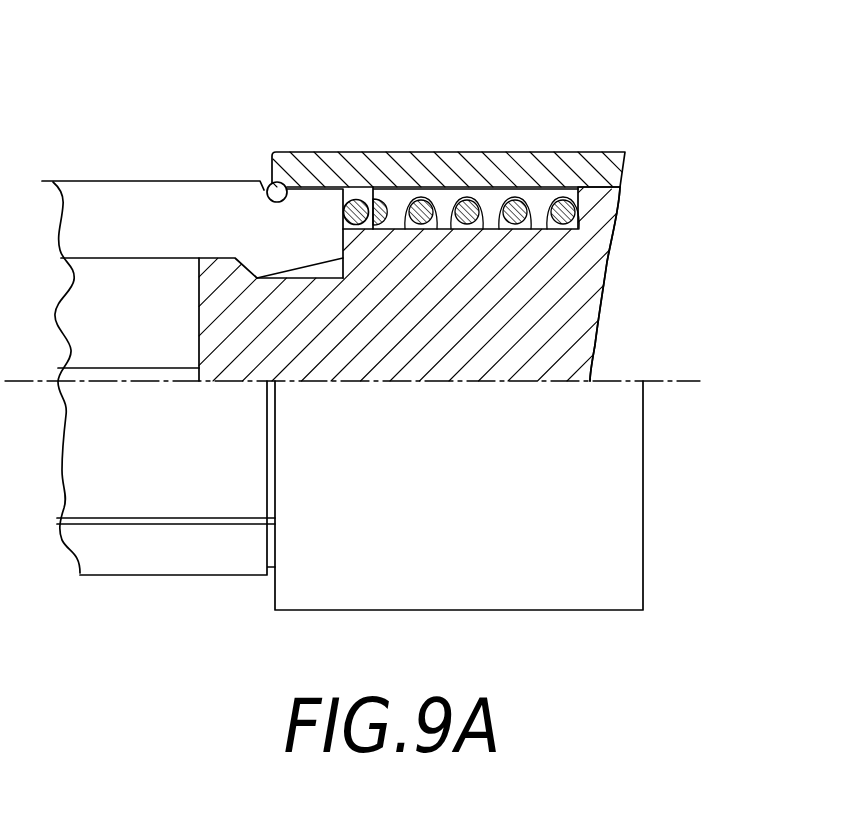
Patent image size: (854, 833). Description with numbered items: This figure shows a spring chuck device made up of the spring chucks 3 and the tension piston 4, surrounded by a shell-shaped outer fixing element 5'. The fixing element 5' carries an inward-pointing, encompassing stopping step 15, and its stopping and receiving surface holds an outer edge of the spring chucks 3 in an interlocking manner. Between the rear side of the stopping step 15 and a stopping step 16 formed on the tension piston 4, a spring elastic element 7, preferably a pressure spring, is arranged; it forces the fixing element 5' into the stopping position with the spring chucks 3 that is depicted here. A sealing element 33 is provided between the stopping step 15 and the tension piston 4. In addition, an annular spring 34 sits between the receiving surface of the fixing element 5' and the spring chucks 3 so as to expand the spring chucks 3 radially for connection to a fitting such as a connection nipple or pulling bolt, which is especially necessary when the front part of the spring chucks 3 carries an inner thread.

The spring chucks 3 is at (110, 190).
The annular spring 34 is at (270, 187).
The stopping step 15 is at (360, 204).
The fixing element 5' is at (448, 108).
The stopping step 16 is at (583, 197).
The spring elastic element 7 is at (580, 233).
The tension piston 4 is at (538, 323).
The sealing element 33 is at (367, 231).